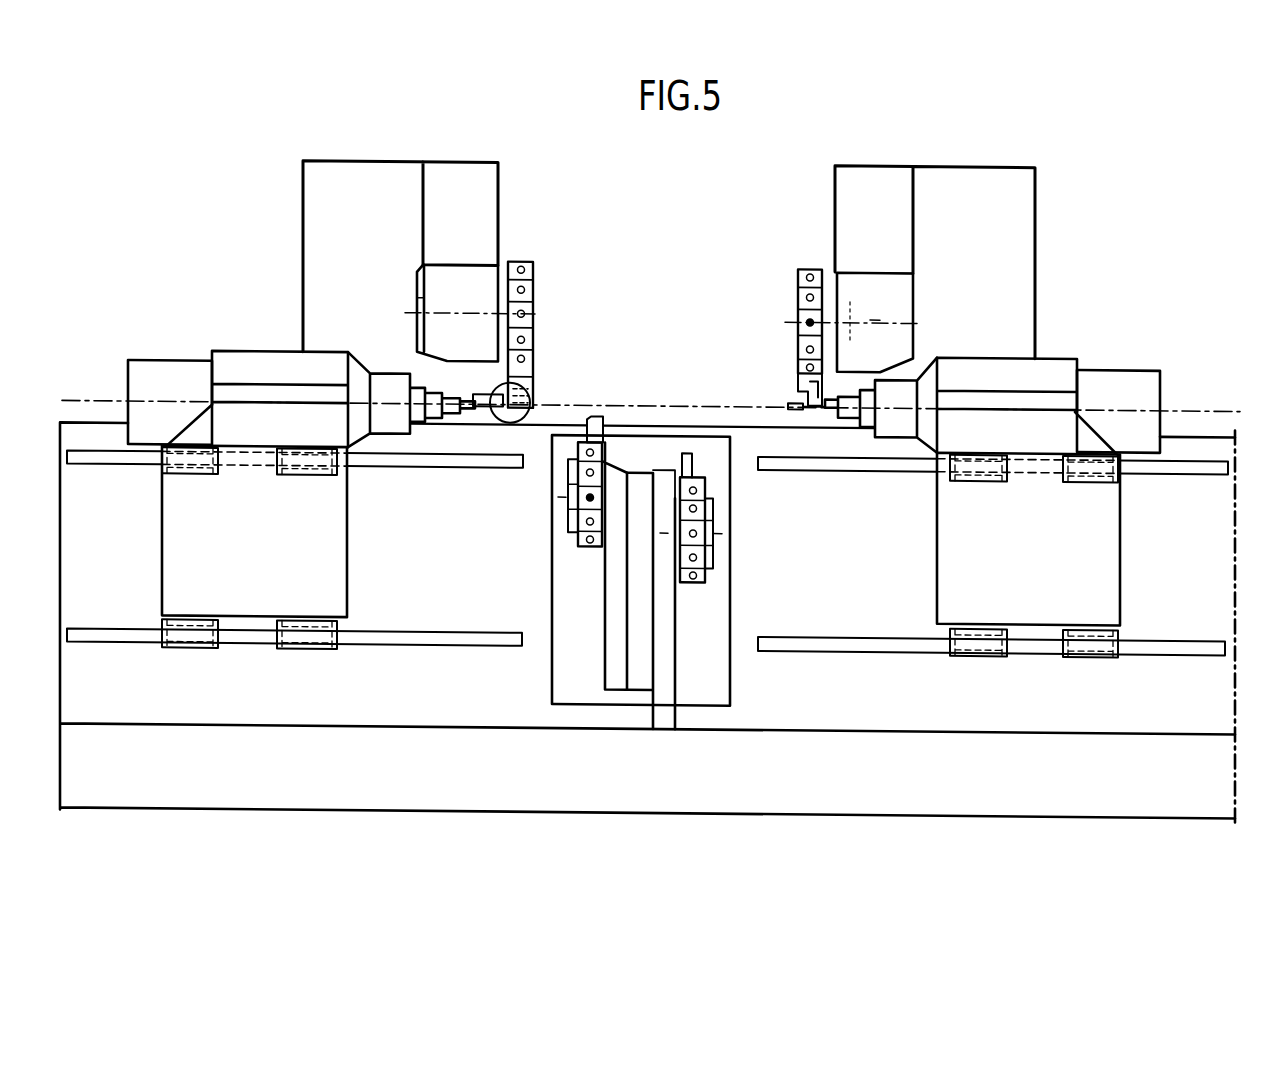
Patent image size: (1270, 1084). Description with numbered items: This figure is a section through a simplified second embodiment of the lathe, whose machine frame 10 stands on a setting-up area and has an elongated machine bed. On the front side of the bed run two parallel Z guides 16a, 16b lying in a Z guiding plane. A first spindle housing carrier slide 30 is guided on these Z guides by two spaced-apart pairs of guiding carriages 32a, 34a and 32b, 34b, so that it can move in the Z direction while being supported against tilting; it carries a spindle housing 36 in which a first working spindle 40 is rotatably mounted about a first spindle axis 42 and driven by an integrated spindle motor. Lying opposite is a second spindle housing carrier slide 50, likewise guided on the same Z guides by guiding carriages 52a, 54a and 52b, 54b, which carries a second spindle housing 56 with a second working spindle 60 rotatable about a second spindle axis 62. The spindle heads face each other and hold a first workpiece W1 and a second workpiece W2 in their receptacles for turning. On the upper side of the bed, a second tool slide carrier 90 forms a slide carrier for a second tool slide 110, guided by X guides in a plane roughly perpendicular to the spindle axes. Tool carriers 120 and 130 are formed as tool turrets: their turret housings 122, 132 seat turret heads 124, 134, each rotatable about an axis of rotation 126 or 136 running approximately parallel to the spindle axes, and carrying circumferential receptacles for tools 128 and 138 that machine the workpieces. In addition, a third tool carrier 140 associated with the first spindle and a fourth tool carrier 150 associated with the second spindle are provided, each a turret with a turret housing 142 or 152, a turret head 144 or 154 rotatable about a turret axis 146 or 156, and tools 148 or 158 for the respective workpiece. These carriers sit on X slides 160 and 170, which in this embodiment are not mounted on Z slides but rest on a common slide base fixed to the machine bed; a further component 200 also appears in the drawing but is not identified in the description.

The machine frame 10 is at (1174, 784).
The Z guide 16a is at (393, 650).
The Z guide 16b is at (400, 472).
The first spindle housing carrier slide 30 is at (252, 584).
The guiding carriage 32a is at (292, 655).
The guiding carriage 32b is at (295, 479).
The guiding carriage 34a is at (178, 655).
The guiding carriage 34b is at (178, 491).
The spindle housing 36 is at (263, 380).
The first working spindle 40 is at (428, 376).
The first spindle axis 42 is at (175, 404).
The first workpiece W1 is at (506, 420).
The second spindle housing carrier slide 50 is at (1032, 612).
The guiding carriage 52a is at (983, 656).
The guiding carriage 52b is at (988, 480).
The guiding carriage 54a is at (1089, 656).
The guiding carriage 54b is at (1100, 480).
The second spindle housing 56 is at (1012, 368).
The second working spindle 60 is at (854, 389).
The second spindle axis 62 is at (1130, 408).
The second workpiece W2 is at (800, 412).
The second tool slide carrier 90 is at (990, 184).
The second tool slide 110 is at (868, 180).
The first tool carrier 120 is at (462, 270).
The turret housing 122 is at (476, 278).
The turret head 124 is at (537, 314).
The axis of rotation 126 is at (428, 306).
The tools 128 is at (505, 392).
The second tool carrier 130 is at (838, 267).
The turret housing 132 is at (851, 291).
The turret head 134 is at (800, 313).
The axis of rotation 136 is at (870, 318).
The tools 138 is at (797, 384).
The third tool carrier 140 is at (568, 465).
The turret housing 142 is at (612, 486).
The turret head 144 is at (565, 500).
The turret axis 146 is at (572, 512).
The tools 148 is at (597, 421).
The fourth tool carrier 150 is at (722, 523).
The turret housing 152 is at (665, 517).
The turret head 154 is at (707, 491).
The turret axis 156 is at (709, 541).
The tools 158 is at (700, 457).
The X slide 160 is at (608, 604).
The X slide 170 is at (680, 642).
The support column 200 is at (640, 674).